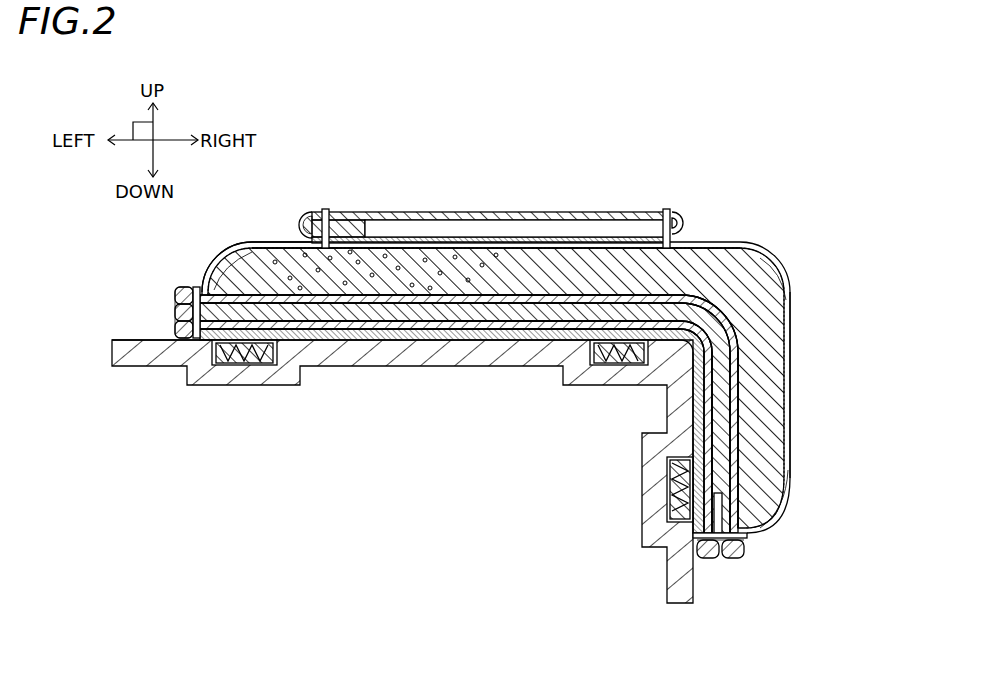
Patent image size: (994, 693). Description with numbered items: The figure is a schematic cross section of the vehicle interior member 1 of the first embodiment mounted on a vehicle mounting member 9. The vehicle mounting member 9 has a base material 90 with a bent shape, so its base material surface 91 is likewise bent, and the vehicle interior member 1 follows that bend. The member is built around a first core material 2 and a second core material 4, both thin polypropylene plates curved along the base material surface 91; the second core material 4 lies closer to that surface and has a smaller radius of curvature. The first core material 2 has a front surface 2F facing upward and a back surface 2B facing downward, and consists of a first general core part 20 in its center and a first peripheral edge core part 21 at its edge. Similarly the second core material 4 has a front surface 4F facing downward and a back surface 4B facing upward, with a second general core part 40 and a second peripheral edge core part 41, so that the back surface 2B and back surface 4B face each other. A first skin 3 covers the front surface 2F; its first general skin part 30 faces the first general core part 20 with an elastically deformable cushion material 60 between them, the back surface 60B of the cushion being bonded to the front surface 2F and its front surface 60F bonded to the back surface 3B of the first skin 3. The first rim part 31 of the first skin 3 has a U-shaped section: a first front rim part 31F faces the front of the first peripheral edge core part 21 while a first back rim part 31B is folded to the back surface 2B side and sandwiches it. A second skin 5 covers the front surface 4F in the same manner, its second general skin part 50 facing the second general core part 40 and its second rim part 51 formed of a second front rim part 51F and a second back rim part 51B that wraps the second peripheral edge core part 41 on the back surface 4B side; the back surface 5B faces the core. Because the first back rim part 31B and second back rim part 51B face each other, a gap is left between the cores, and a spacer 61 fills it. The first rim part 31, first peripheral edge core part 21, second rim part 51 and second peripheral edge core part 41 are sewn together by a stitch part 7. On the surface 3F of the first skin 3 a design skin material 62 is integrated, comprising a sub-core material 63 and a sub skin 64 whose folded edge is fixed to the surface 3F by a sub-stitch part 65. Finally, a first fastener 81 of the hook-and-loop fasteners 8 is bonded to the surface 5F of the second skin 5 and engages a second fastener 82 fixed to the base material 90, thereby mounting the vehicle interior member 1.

The vehicle interior member 1 is at (487, 352).
The first core material 2 is at (516, 353).
The back surface 2B is at (530, 297).
The front surface 2F is at (565, 247).
The first skin 3 is at (487, 352).
The back surface 3B is at (493, 248).
The surface 3F is at (285, 243).
The second core material 4 is at (480, 370).
The back surface 4B is at (440, 322).
The front surface 4F is at (385, 304).
The second skin 5 is at (421, 376).
The back surface 5B is at (352, 331).
The surface 5F is at (400, 323).
The stitch part 7 is at (197, 340).
The hook-and-loop fasteners 8 is at (452, 431).
The vehicle mounting member 9 is at (376, 442).
The first general core part 20 is at (762, 345).
The first peripheral edge core part 21 is at (196, 287).
The first general skin part 30 is at (788, 292).
The first rim part 31 is at (487, 390).
The first back rim part 31B is at (207, 290).
The first front rim part 31F is at (748, 534).
The second general core part 40 is at (708, 390).
The second peripheral edge core part 41 is at (178, 328).
The second general skin part 50 is at (318, 367).
The second rim part 51 is at (421, 376).
The second back rim part 51B is at (186, 296).
The second front rim part 51F is at (700, 524).
The cushion material 60 is at (452, 336).
The back surface 60B is at (462, 335).
The front surface 60F is at (428, 242).
The spacer 61 is at (327, 212).
The design skin material 62 is at (491, 189).
The sub-core material 63 is at (395, 228).
The sub skin 64 is at (537, 214).
The sub-stitch part 65 is at (665, 212).
The first fastener 81 is at (262, 362).
The second fastener 82 is at (235, 362).
The base material 90 is at (138, 367).
The base material surface 91 is at (122, 339).